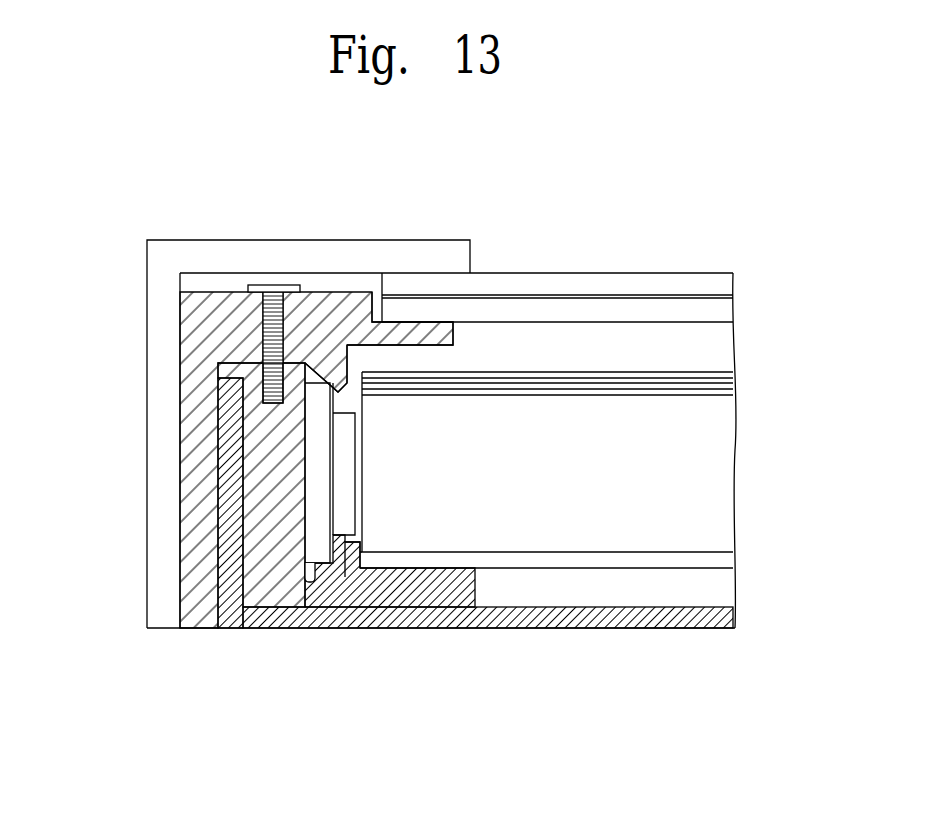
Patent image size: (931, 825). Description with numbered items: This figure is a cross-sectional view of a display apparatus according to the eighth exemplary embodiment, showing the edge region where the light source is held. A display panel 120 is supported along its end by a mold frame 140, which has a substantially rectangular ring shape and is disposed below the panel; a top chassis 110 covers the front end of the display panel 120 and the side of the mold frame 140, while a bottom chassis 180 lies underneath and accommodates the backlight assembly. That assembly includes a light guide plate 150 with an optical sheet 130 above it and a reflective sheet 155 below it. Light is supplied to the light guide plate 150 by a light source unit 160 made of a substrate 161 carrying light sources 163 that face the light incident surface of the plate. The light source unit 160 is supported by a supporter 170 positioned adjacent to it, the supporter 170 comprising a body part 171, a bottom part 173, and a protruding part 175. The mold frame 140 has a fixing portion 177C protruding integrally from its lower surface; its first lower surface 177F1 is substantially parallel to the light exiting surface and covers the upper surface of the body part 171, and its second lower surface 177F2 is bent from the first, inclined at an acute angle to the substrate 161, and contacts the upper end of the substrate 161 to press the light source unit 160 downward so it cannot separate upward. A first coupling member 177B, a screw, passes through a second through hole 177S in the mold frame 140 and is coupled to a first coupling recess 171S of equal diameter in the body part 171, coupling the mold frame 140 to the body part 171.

The top chassis 110 is at (158, 582).
The display panel 120 is at (753, 275).
The optical sheet 130 is at (753, 372).
The mold frame 140 is at (198, 355).
The light guide plate 150 is at (722, 466).
The reflective sheet 155 is at (722, 560).
The light source unit 160 is at (340, 692).
The substrate 161 is at (345, 545).
The light sources 163 is at (346, 563).
The supporter 170 is at (217, 532).
The body part 171 is at (250, 487).
The first coupling recess 171S is at (258, 393).
The bottom part 173 is at (428, 600).
The protruding part 175 is at (360, 576).
The first coupling member 177B is at (266, 285).
The fixing portion 177C is at (347, 365).
The first lower surface 177F1 is at (292, 358).
The second lower surface 177F2 is at (322, 372).
The second through hole 177S is at (258, 318).
The bottom chassis 180 is at (563, 628).